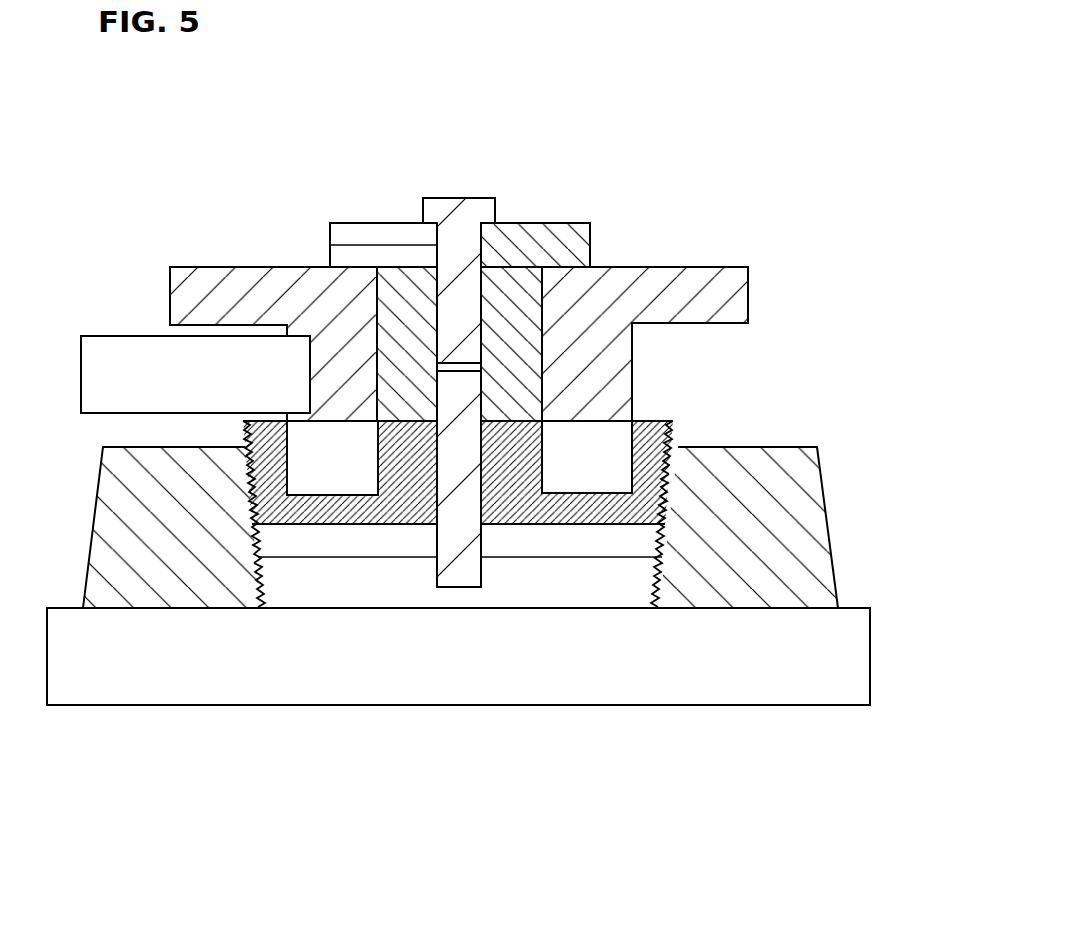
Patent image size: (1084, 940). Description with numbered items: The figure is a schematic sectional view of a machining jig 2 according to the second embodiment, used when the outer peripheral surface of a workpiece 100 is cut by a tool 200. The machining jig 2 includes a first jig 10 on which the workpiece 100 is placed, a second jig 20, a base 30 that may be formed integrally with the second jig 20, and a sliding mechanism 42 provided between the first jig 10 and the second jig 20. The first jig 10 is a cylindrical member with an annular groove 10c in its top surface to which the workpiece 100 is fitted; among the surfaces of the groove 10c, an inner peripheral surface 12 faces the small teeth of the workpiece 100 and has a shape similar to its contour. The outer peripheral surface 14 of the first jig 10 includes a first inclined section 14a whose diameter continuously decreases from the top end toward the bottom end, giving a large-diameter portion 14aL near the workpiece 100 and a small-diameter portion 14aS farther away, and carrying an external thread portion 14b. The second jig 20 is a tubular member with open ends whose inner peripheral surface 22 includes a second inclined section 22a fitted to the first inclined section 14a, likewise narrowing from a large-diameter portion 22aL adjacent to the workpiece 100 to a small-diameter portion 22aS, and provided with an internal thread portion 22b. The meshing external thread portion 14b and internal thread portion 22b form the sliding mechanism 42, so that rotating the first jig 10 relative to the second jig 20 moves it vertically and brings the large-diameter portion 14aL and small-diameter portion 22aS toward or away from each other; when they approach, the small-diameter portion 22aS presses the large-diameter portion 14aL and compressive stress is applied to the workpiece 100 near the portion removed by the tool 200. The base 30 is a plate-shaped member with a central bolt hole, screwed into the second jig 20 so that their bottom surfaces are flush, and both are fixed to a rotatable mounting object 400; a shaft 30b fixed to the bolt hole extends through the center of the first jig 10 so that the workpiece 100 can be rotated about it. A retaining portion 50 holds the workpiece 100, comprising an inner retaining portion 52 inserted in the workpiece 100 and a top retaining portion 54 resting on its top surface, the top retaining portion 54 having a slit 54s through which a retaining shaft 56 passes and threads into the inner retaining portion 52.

The machining jig 2 is at (487, 482).
The first jig 10 is at (477, 276).
The annular groove 10c is at (612, 419).
The inner peripheral surface 12 is at (628, 472).
The outer peripheral surface 14 is at (460, 479).
The first inclined section 14a is at (766, 443).
The large-diameter portion 14aL is at (676, 423).
The small-diameter portion 14aS is at (678, 535).
The external thread portion 14b is at (677, 540).
The second jig 20 is at (137, 587).
The inner peripheral surface 22 is at (499, 648).
The second inclined section 22a is at (425, 667).
The small-diameter portion 22aS is at (266, 592).
The large-diameter portion 22aL is at (300, 510).
The internal thread portion 22b is at (255, 560).
The base 30 is at (357, 582).
The shaft 30b is at (459, 572).
The sliding mechanism 42 is at (900, 492).
The retaining portion 50 is at (425, 443).
The inner retaining portion 52 is at (528, 283).
The top retaining portion 54 is at (570, 240).
The slit 54s is at (345, 232).
The retaining shaft 56 is at (432, 208).
The workpiece 100 is at (700, 273).
The tool 200 is at (115, 355).
The mounting object 400 is at (634, 672).